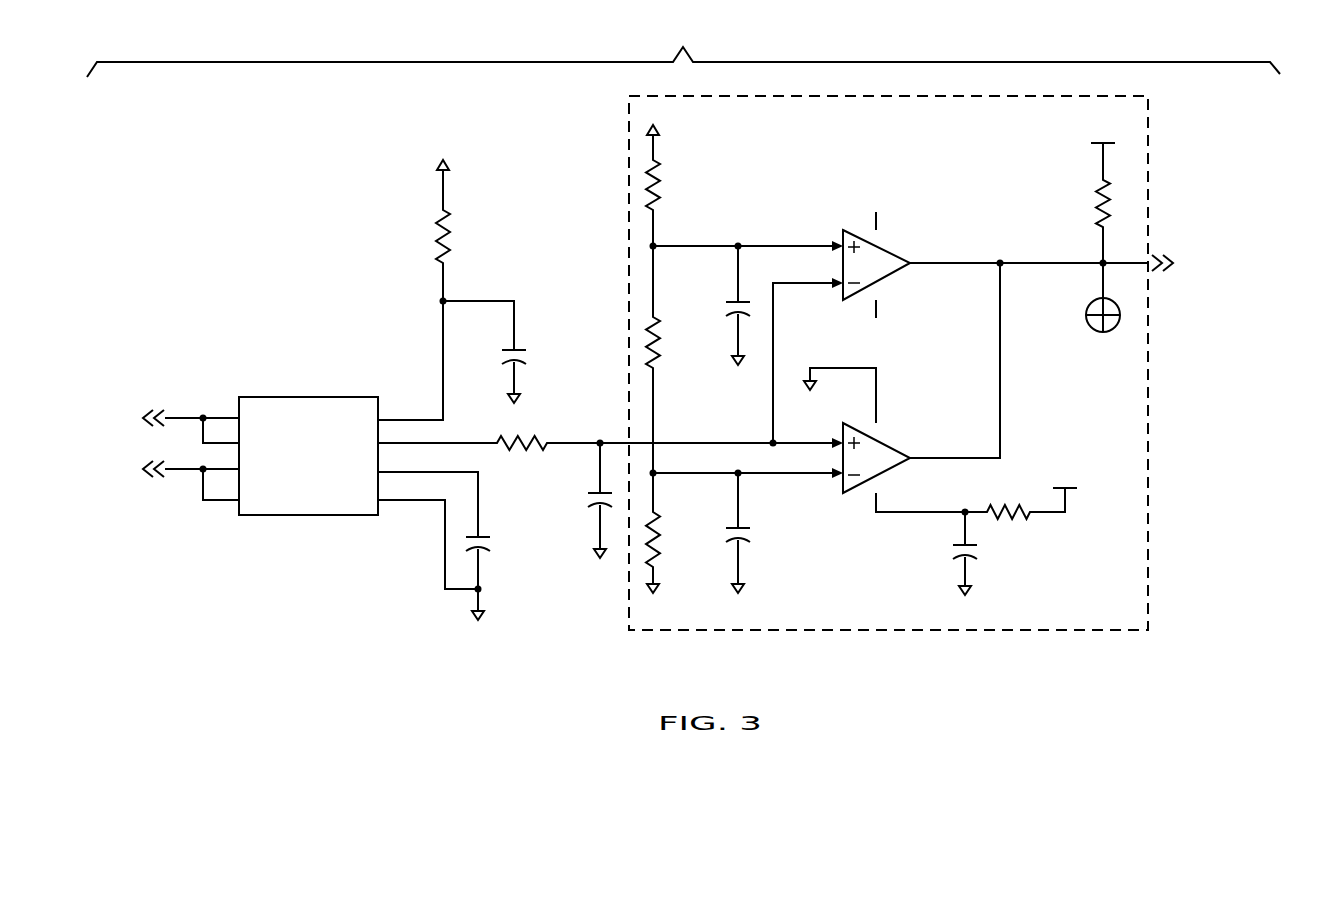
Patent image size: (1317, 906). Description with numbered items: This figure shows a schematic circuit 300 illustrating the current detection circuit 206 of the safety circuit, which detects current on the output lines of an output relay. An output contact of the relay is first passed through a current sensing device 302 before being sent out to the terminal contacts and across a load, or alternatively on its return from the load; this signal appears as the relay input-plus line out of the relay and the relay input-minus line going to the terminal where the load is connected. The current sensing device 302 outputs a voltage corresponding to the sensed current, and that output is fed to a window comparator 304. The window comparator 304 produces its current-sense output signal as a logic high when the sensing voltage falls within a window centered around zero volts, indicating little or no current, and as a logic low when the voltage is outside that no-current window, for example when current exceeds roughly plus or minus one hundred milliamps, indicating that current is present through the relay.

The current detection circuit 206 is at (683, 50).
The schematic circuit 300 is at (547, 604).
The current sensing device 302 is at (311, 397).
The window comparator 304 is at (629, 131).